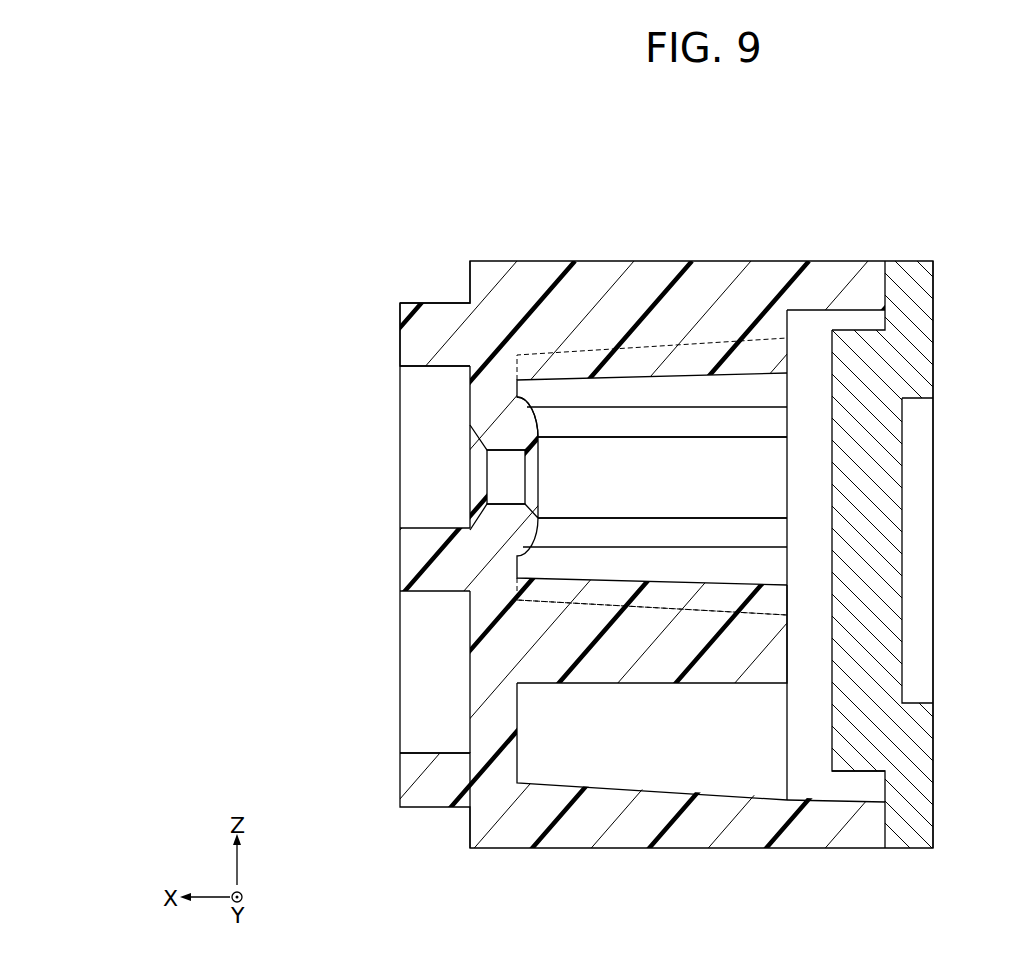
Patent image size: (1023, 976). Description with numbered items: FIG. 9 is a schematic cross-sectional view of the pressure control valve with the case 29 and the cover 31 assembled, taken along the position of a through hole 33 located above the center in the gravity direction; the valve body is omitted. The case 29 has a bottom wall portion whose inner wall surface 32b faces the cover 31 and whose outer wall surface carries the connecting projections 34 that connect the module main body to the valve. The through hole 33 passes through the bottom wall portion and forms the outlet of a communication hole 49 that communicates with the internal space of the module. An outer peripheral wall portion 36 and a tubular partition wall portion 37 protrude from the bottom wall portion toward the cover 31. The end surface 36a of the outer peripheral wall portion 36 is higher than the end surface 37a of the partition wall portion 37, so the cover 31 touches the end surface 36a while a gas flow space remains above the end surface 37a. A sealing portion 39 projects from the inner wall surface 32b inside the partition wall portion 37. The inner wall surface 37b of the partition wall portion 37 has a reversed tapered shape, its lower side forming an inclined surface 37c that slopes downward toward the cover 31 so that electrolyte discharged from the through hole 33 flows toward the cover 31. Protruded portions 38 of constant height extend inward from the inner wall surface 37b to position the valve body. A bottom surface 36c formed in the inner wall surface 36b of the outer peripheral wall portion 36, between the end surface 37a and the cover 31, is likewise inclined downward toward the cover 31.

The case 29 is at (527, 248).
The cover 31 is at (942, 780).
The inner wall surface 32b is at (470, 843).
The through hole 33 is at (505, 492).
The connecting projection 34 is at (432, 323).
The outer peripheral wall portion 36 is at (639, 287).
The end surface 36a is at (882, 290).
The inner wall surface 36b is at (554, 786).
The bottom surface 36c is at (841, 790).
The partition wall portion 37 is at (603, 650).
The end surface 37a is at (788, 645).
The inner wall surface 37b is at (671, 356).
The inclined surface 37c is at (716, 605).
The protruded portion 38 is at (752, 384).
The sealing portion 39 is at (542, 424).
The communication hole 49 is at (431, 500).